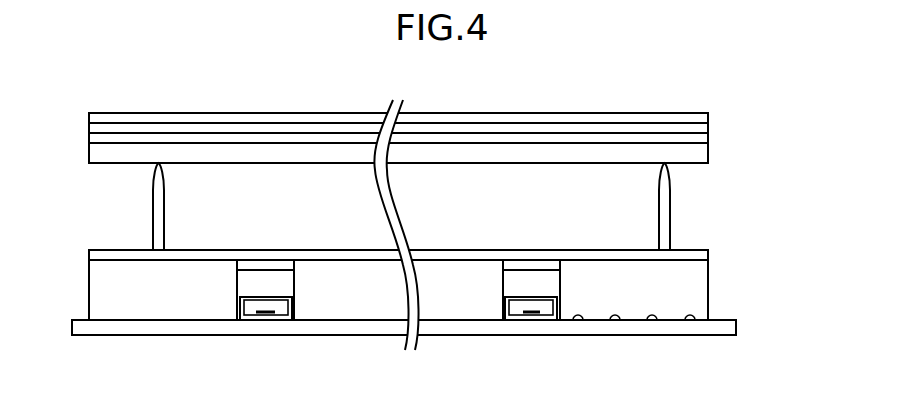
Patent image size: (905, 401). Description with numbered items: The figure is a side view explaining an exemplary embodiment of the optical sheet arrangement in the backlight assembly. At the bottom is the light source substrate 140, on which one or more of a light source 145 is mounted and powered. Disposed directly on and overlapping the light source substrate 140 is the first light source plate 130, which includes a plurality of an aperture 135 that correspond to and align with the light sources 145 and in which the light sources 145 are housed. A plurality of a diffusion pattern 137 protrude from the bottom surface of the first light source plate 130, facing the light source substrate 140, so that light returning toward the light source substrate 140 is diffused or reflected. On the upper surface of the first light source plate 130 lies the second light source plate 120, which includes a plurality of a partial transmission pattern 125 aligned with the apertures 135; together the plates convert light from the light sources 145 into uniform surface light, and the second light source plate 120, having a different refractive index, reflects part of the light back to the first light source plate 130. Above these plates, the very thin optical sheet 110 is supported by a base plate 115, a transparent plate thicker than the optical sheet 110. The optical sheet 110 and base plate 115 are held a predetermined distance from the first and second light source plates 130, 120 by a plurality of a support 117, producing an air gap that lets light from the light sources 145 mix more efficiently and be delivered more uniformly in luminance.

The optical sheet 110 is at (713, 113).
The base plate 115 is at (695, 152).
The support 117 is at (670, 216).
The second light source plate 120 is at (697, 255).
The first light source plate 130 is at (697, 287).
The light source substrate 140 is at (727, 328).
The partial transmission pattern 125 is at (502, 265).
The aperture 135 is at (500, 290).
The light source 145 is at (550, 318).
The diffusion pattern 137 is at (652, 320).